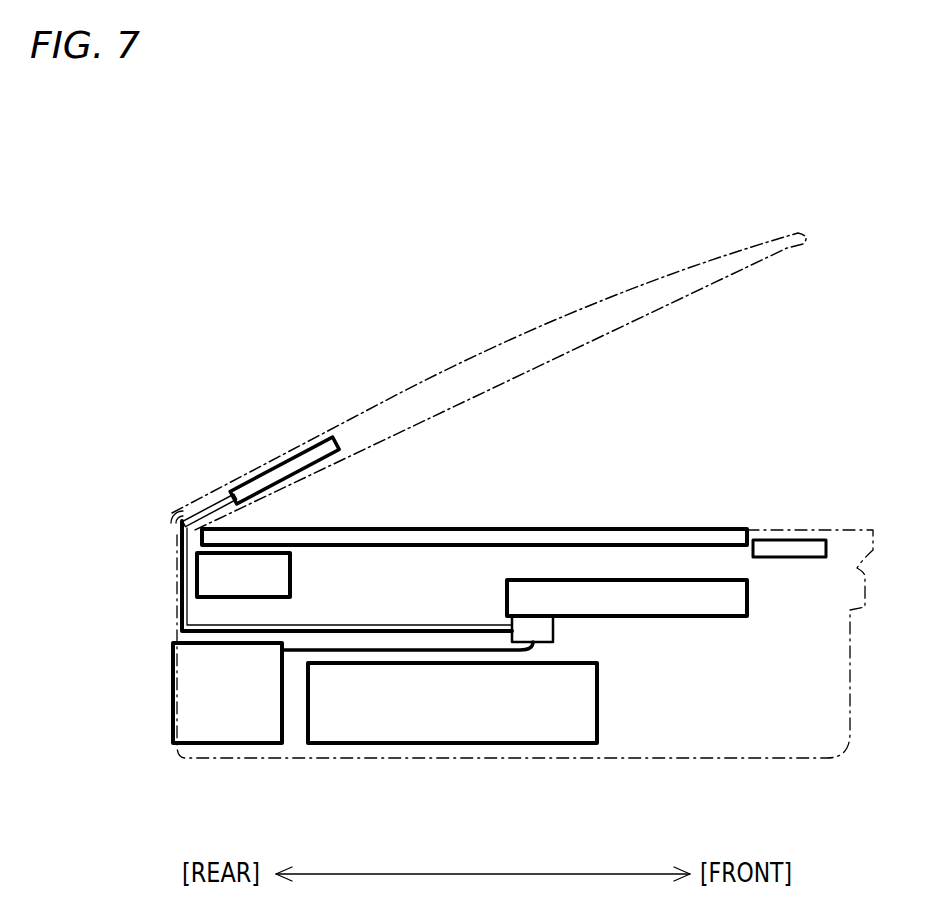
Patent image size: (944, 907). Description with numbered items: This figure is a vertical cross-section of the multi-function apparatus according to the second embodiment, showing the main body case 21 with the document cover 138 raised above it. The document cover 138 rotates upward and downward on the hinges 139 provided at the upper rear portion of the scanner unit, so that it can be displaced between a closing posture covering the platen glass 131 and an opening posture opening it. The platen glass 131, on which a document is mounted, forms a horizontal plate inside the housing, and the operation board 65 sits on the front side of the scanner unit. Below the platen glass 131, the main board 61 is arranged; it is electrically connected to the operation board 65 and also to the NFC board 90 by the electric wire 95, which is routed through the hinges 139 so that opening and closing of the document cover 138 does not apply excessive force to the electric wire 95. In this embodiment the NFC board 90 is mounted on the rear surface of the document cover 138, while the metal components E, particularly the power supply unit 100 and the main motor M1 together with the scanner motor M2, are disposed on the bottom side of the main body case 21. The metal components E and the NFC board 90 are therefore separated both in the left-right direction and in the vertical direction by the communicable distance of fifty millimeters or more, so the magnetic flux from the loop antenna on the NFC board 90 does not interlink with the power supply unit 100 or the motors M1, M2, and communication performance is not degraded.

The main body case 21 is at (753, 758).
The document cover 138 is at (551, 320).
The hinges 139 is at (178, 518).
The electric wire 95 is at (207, 512).
The NFC board 90 is at (302, 460).
The platen glass 131 is at (624, 535).
The operation board 65 is at (795, 550).
The scanner motor M2 is at (275, 573).
The main board 61 is at (705, 597).
The main motor M1 is at (228, 720).
The power supply unit 100 is at (457, 722).
The metal components E is at (613, 726).